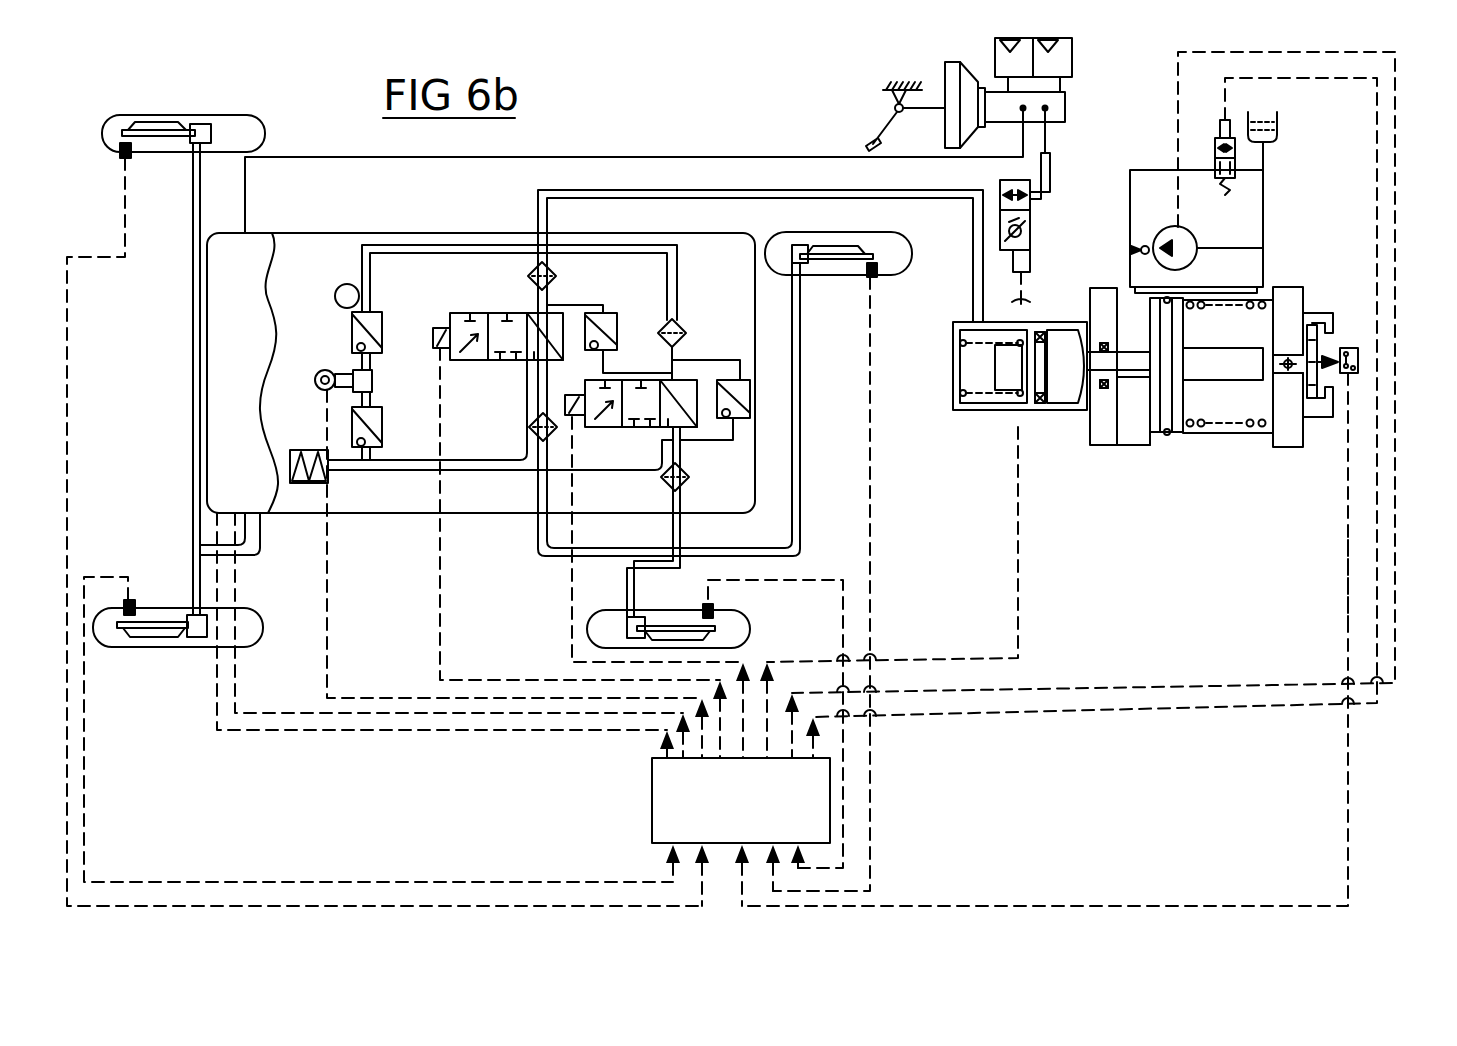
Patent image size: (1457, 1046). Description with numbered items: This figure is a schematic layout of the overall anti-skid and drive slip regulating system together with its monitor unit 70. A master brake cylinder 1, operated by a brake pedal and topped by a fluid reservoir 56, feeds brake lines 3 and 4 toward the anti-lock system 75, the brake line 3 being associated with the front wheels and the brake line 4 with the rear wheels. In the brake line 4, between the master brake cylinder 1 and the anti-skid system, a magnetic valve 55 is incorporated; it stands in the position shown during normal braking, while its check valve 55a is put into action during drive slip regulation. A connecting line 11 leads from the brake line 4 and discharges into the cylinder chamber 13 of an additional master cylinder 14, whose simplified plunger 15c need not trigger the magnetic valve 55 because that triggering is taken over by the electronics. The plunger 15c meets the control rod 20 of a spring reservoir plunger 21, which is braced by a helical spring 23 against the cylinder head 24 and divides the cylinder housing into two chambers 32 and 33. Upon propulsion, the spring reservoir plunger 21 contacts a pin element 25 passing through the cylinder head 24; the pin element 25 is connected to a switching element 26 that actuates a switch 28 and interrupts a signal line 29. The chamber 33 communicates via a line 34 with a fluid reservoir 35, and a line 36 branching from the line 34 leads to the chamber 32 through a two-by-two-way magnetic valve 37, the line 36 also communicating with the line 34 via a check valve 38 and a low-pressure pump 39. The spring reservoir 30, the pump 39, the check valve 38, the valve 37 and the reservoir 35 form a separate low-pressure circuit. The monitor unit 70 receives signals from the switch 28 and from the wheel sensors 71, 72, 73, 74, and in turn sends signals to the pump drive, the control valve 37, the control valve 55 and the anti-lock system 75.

The master brake cylinder 1 is at (1000, 123).
The brake line 3 is at (1023, 137).
The brake line 4 is at (1048, 135).
The connecting line 11 is at (972, 272).
The cylinder chamber 13 is at (987, 382).
The additional master cylinder 14 is at (1000, 412).
The plunger 15c is at (1066, 392).
The control rod 20 is at (1146, 346).
The spring reservoir plunger 21 is at (1160, 435).
The helical spring 23 is at (1200, 432).
The cylinder head 24 is at (1292, 437).
The pin element 25 is at (1285, 360).
The switching element 26 is at (1313, 398).
The switch 28 is at (1360, 362).
The signal line 29 is at (1350, 570).
The spring reservoir 30 is at (1262, 456).
The cylindrical chamber 32 is at (1130, 425).
The cylindrical chamber 33 is at (1226, 412).
The line 34 is at (1265, 196).
The fluid reservoir 35 is at (1277, 124).
The line 36 is at (1130, 190).
The 2/2-way magnetic valve 37 is at (1215, 160).
The check valve 38 is at (1145, 246).
The low-pressure pump 39 is at (1187, 232).
The magnetic valve 55 is at (1030, 243).
The check valve 55a is at (1000, 222).
The brake fluid reservoir 56 is at (1062, 58).
The monitor unit 70 is at (665, 798).
The wheel sensor 71 is at (865, 277).
The wheel sensor 72 is at (714, 608).
The wheel sensor 73 is at (137, 605).
The wheel sensor 74 is at (131, 155).
The ABS system 75 is at (265, 232).